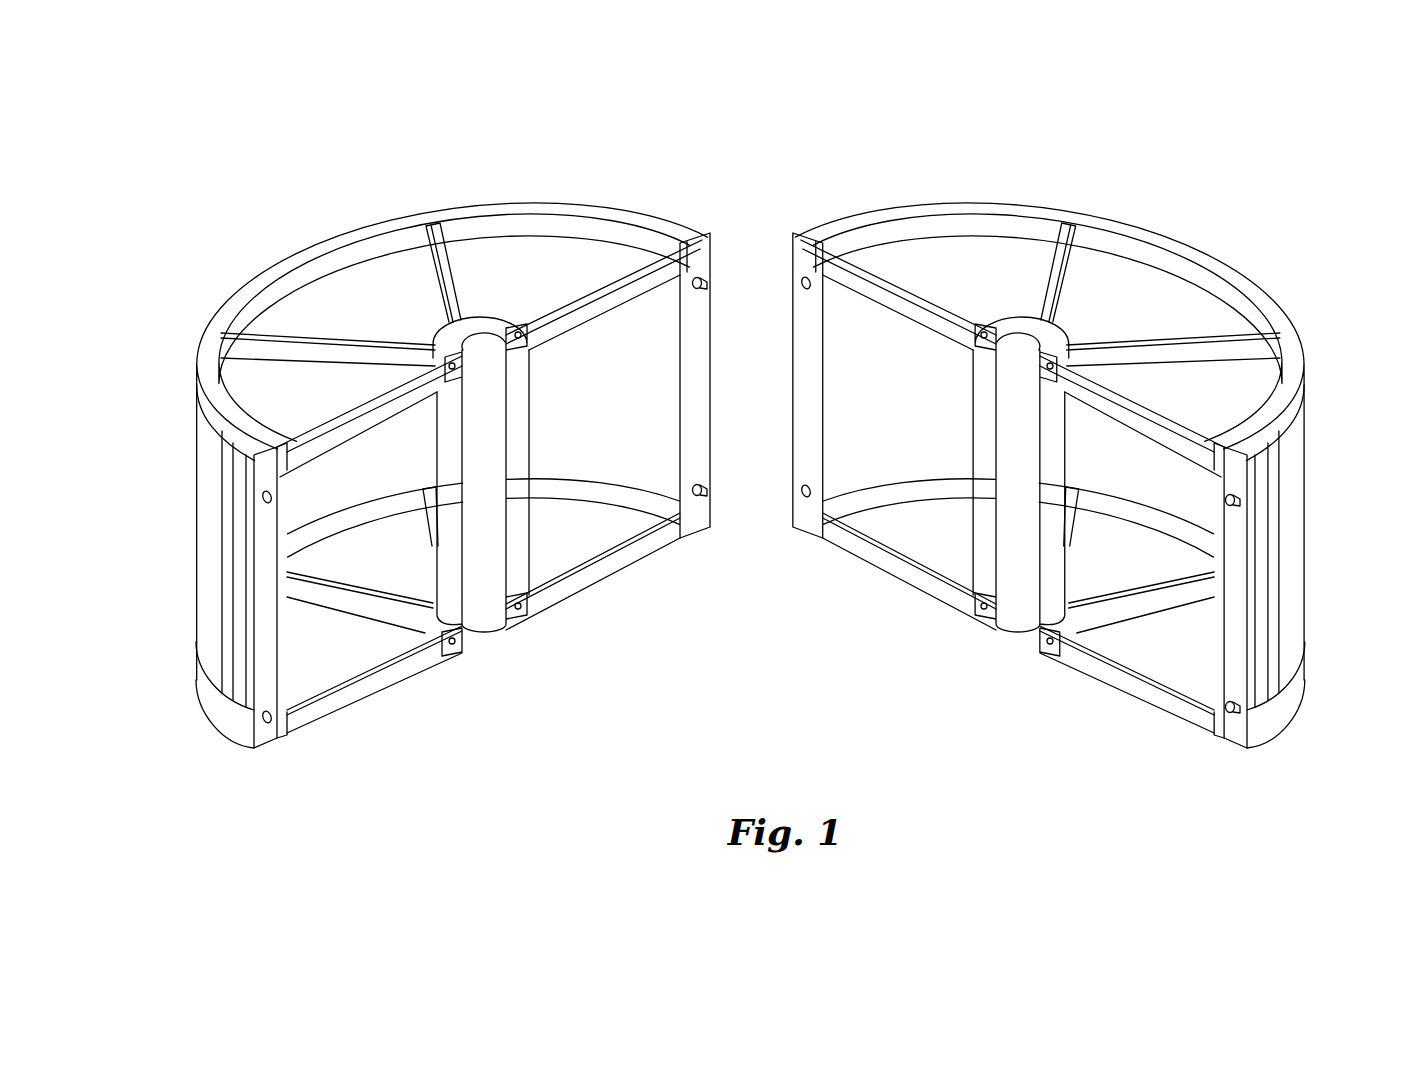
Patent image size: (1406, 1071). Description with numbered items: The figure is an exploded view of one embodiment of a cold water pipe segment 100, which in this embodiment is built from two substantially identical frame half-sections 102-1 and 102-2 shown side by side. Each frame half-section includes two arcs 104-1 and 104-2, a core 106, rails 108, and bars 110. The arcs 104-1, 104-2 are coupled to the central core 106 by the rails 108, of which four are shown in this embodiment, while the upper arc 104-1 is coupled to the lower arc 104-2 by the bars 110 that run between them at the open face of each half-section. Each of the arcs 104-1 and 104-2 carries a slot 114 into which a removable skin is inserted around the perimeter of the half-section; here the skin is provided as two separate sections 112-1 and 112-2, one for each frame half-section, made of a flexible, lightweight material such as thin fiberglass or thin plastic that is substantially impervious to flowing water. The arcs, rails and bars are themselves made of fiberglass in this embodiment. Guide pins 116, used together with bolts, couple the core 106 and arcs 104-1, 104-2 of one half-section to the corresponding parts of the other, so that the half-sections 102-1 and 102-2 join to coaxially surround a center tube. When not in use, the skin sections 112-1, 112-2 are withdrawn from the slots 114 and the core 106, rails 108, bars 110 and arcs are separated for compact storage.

The cold water pipe segment 100 is at (938, 118).
The frame half-section 102-1 is at (330, 234).
The frame half-section 102-2 is at (1169, 234).
The arc 104-1 is at (200, 380).
The arc 104-2 is at (218, 712).
The core 106 is at (480, 608).
The rail 108 is at (398, 338).
The bar 110 is at (266, 748).
The removable skin section 112-1 is at (197, 566).
The removable skin section 112-2 is at (1303, 568).
The slot 114 is at (290, 442).
The guide pin 116 is at (708, 290).